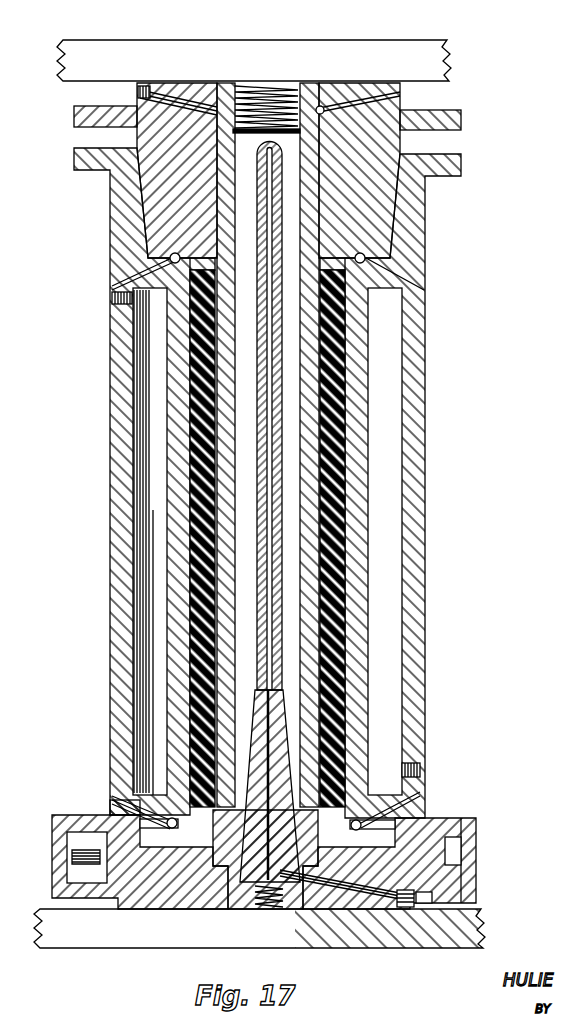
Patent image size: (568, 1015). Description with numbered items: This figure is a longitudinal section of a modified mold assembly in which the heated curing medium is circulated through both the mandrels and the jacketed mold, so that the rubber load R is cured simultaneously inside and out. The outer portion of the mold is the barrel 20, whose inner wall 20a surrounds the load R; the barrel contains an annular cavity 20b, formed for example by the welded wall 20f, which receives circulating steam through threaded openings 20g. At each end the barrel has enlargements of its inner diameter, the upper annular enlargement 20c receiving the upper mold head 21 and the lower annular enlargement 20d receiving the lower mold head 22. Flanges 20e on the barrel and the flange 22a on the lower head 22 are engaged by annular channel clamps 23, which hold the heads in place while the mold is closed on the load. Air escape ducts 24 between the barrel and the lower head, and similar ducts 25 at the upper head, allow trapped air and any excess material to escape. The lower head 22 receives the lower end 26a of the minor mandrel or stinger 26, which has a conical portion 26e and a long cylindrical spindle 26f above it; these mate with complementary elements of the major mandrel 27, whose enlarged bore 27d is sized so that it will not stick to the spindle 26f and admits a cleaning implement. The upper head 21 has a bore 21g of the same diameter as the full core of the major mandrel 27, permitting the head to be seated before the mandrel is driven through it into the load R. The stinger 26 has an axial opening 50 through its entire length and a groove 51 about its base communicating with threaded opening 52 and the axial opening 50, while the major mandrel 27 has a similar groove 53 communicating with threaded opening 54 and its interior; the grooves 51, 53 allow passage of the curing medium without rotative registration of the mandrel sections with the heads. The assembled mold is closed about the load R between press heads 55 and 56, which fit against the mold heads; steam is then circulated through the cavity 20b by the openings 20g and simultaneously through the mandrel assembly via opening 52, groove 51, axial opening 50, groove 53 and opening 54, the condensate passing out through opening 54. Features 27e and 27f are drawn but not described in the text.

The barrel 20 is at (426, 400).
The inner wall 20a is at (357, 487).
The annular cavity 20b is at (396, 358).
The upper annular enlargement 20c is at (135, 185).
The lower annular enlargement 20d is at (125, 815).
The flange 20e is at (112, 298).
The cavity wall 20f is at (366, 262).
The threaded openings 20g is at (422, 773).
The upper mold head 21 is at (155, 138).
The bore 21g is at (328, 96).
The lower mold head 22 is at (478, 883).
The flange 22a is at (309, 893).
The annular channel clamps 23 is at (52, 866).
The air escape ducts 24 is at (112, 796).
The ducts 25 is at (112, 286).
The minor mandrel 26 is at (296, 841).
The lower end 26a is at (245, 820).
The conical portion 26e is at (248, 780).
The cylindrical spindle 26f is at (250, 486).
The major mandrel 27 is at (219, 83).
The enlarged bore 27d is at (306, 150).
The lower spring coil 27e is at (265, 908).
The upper spring coil 27f is at (262, 100).
The axial opening 50 is at (262, 302).
The groove 51 is at (213, 883).
The threaded opening 52 is at (424, 907).
The groove 53 is at (334, 112).
The threaded opening 54 is at (138, 92).
The press head 55 is at (442, 936).
The press head 56 is at (425, 71).
The rubber load R is at (338, 536).